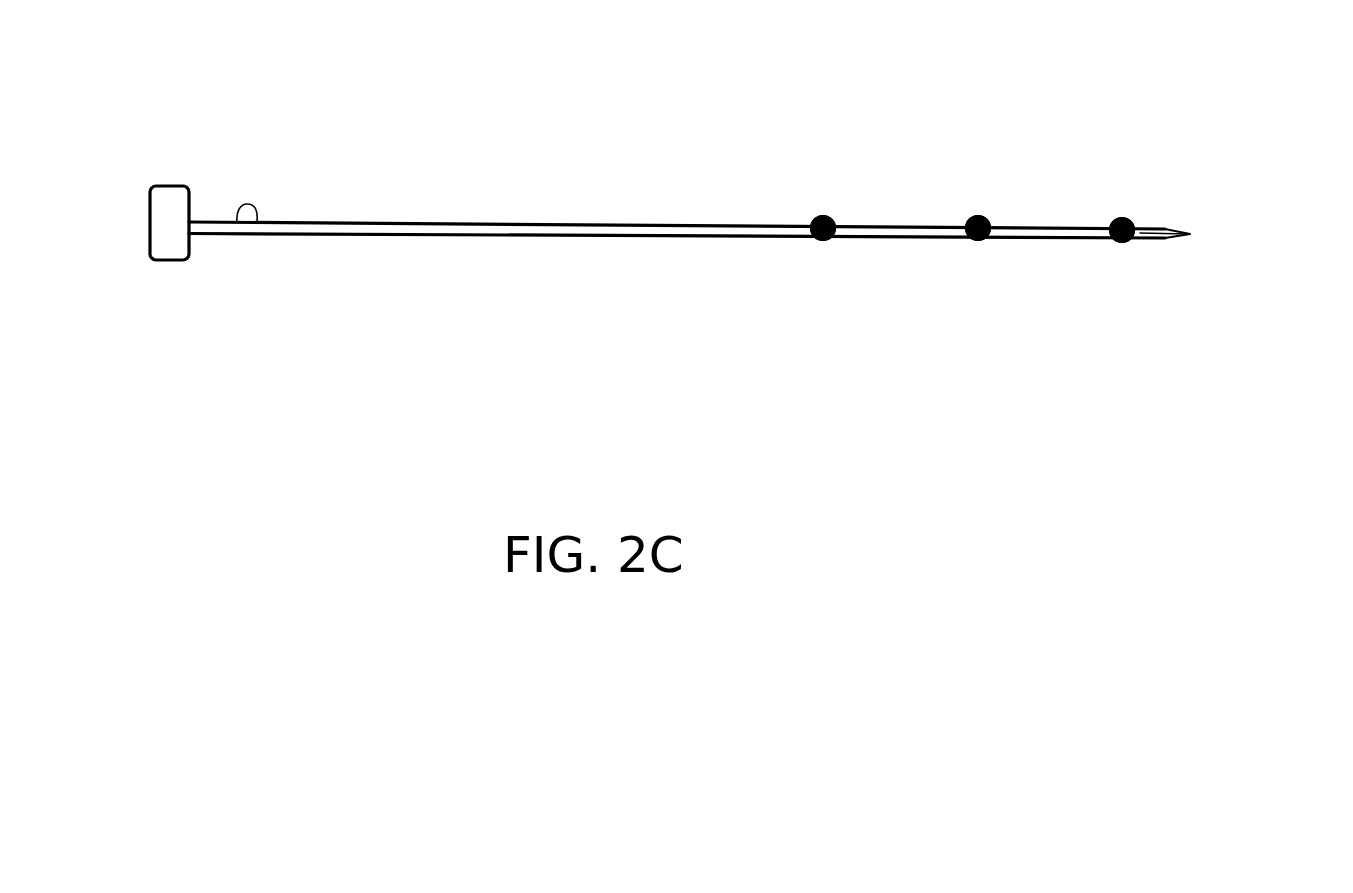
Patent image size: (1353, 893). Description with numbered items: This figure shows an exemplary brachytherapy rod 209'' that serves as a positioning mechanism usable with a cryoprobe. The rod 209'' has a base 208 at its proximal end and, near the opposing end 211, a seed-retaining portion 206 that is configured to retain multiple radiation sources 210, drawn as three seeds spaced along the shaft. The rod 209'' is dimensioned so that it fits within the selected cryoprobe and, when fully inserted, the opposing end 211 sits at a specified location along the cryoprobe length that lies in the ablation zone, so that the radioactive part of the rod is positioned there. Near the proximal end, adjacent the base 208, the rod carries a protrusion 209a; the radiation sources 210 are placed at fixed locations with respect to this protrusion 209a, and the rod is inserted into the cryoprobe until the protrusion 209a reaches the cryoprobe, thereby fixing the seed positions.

The seed-retaining portion 206 is at (1125, 217).
The base 208 is at (150, 205).
The protrusion 209a is at (249, 204).
The rod 209'' is at (677, 152).
The radiation source (seed) 210 is at (833, 242).
The opposing end 211 is at (1178, 238).